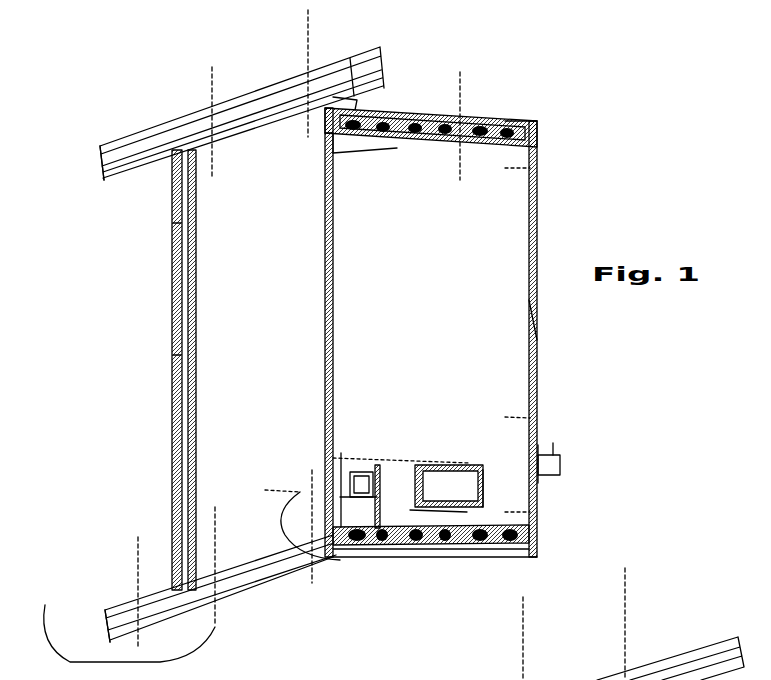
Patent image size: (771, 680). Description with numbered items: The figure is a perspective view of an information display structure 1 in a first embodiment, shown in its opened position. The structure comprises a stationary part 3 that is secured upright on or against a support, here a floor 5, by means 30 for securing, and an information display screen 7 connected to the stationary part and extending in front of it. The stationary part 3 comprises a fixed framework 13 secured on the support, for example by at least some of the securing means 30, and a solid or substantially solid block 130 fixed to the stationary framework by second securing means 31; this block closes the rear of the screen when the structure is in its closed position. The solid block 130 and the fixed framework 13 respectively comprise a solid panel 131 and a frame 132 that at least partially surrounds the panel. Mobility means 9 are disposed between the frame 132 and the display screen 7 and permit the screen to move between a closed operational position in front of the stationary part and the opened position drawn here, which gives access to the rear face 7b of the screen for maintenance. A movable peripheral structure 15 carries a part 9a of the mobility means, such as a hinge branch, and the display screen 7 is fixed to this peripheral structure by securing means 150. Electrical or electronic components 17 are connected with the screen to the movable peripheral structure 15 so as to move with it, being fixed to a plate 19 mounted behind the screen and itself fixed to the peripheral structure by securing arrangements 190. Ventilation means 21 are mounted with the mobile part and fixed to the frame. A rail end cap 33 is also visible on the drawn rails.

The information display structure 1 is at (147, 387).
The stationary part 3 is at (173, 290).
The floor 5 is at (255, 614).
The information display screen 7 is at (500, 208).
The rear face of the screen 7b is at (532, 314).
The mobility means 9 is at (395, 112).
The part of the mobility means 9a is at (334, 155).
The fixed framework 13 is at (171, 252).
The movable peripheral structure 15 is at (515, 127).
The electrical or electronic components 17 is at (445, 500).
The plate 19 is at (492, 520).
The ventilation means 21 is at (474, 132).
The securing means 30 is at (205, 90).
The second securing means 31 is at (240, 200).
The rail end cap 33 is at (128, 131).
The solid block 130 is at (217, 216).
The solid panel 131 is at (223, 346).
The frame 132 is at (350, 62).
The securing means 150 is at (468, 92).
The securing arrangements 190 is at (547, 514).